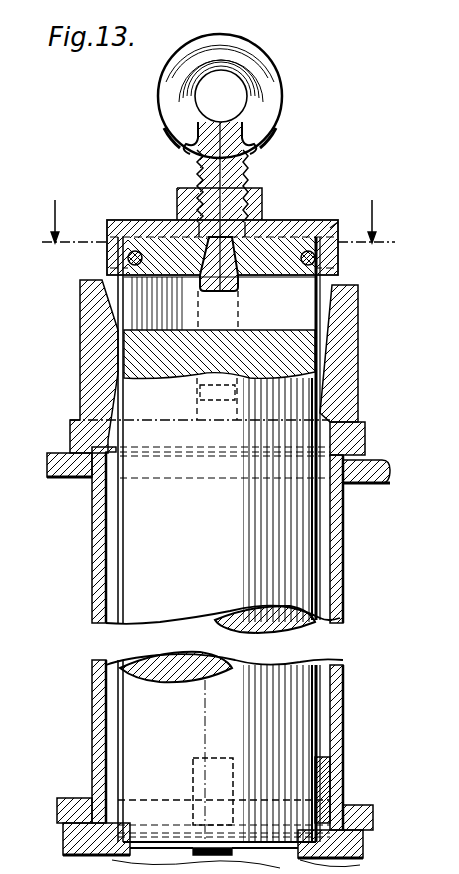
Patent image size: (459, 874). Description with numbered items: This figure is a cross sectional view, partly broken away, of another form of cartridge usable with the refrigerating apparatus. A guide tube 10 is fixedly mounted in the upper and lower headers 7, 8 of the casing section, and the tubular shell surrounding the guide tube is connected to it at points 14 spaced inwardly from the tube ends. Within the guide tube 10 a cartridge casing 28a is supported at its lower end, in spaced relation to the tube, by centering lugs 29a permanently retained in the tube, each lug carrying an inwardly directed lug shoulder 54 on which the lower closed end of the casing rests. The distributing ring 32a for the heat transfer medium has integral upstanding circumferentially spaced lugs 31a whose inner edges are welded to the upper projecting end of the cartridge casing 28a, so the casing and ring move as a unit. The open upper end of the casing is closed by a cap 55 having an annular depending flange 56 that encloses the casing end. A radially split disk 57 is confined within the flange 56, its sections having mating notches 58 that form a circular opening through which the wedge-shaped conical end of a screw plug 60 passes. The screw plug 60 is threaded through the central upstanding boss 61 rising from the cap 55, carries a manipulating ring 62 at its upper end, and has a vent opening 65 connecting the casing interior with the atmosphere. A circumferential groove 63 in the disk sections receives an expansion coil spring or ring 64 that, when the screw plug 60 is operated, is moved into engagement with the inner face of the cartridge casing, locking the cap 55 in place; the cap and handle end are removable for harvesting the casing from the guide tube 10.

The connection points 14 is at (218, 209).
The manipulating ring 62 is at (266, 86).
The vent opening 65 is at (245, 150).
The screw plug 60 is at (198, 185).
The central upstanding boss 61 is at (180, 200).
The annular depending flange 56 is at (340, 263).
The radially split disk 57 is at (272, 262).
The cap 55 is at (268, 228).
The mating notches 58 is at (256, 216).
The circumferential groove 63 is at (341, 214).
The expansion coil spring or ring 64 is at (128, 258).
The distributing ring 32a is at (366, 433).
The upstanding lugs 31a is at (345, 385).
The upper header 7 is at (388, 470).
The guide tube 10 is at (335, 714).
The cartridge casing 28a is at (126, 648).
The centering lugs 29a is at (192, 781).
The lower header 8 is at (373, 820).
The lug shoulder 54 is at (190, 852).